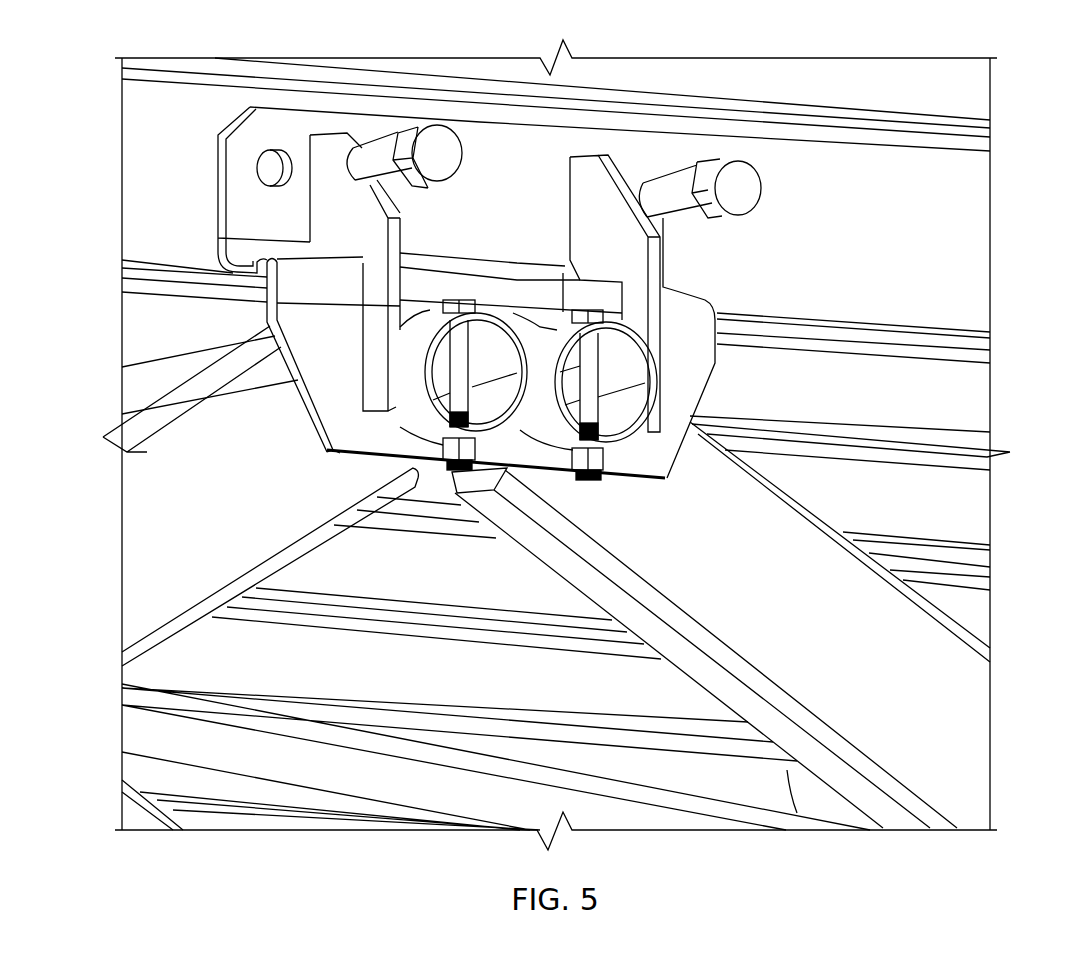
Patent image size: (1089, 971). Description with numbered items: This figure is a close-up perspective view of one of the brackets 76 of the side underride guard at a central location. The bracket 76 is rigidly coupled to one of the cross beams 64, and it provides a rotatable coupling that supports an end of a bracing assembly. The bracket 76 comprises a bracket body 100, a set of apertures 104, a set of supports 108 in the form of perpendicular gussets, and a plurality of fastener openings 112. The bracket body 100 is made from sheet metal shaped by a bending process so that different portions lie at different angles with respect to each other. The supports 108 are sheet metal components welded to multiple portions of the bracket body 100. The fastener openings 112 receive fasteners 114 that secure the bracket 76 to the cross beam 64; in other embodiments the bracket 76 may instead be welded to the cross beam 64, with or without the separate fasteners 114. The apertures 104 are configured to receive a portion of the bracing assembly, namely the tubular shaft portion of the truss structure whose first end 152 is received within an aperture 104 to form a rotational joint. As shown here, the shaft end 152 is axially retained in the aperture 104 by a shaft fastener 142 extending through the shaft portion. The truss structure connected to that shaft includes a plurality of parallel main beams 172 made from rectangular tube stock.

The cross beam 64 is at (172, 107).
The bracket 76 is at (446, 110).
The bracket body 100 is at (604, 247).
The apertures 104 is at (392, 430).
The supports 108 is at (333, 133).
The fastener openings 112 is at (267, 148).
The fasteners 114 is at (427, 142).
The shaft fastener 142 is at (460, 358).
The first end 152 is at (562, 330).
The main beams 172 is at (940, 702).